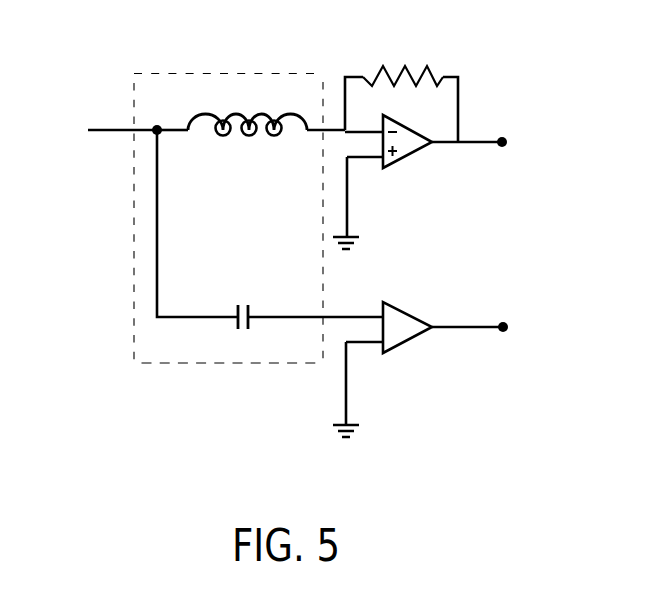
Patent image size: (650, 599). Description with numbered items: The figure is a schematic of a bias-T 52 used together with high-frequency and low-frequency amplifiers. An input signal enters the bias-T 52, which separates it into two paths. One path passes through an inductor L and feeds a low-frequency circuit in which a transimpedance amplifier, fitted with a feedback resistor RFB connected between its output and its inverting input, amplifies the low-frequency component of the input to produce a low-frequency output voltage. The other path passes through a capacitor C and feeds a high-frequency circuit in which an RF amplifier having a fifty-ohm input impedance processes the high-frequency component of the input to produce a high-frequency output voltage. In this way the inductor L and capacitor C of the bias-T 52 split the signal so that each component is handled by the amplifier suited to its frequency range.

The bias-T 52 is at (258, 203).
The inductor L is at (247, 138).
The capacitor C is at (243, 326).
The feedback resistor RFB is at (403, 68).